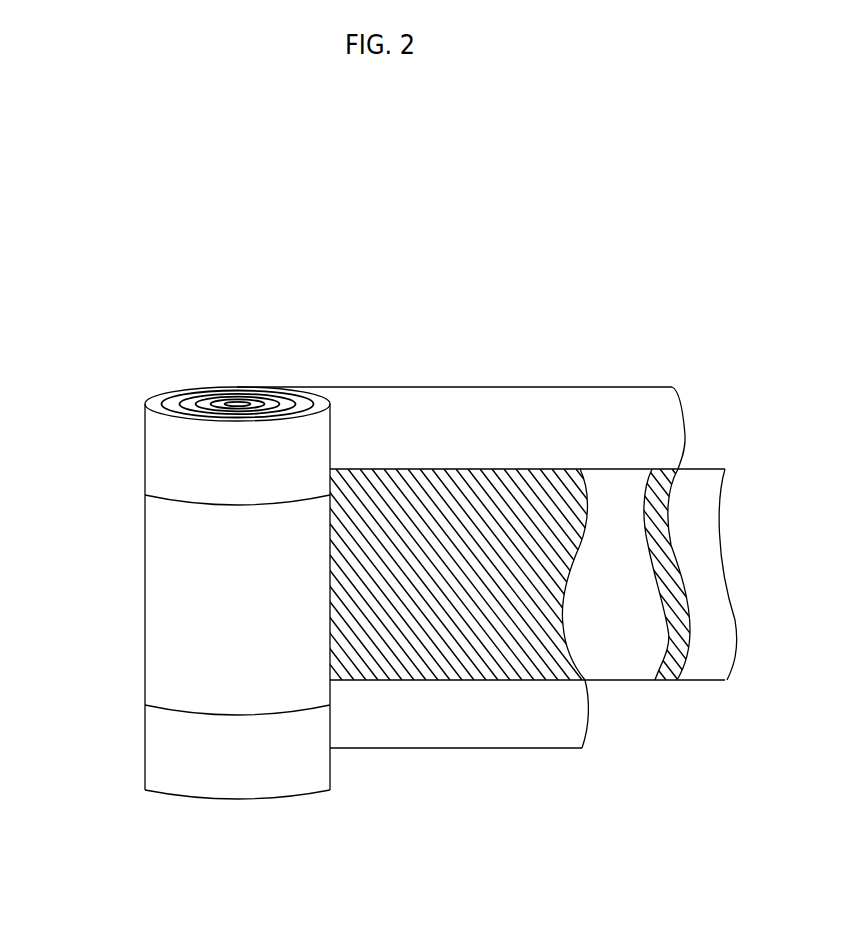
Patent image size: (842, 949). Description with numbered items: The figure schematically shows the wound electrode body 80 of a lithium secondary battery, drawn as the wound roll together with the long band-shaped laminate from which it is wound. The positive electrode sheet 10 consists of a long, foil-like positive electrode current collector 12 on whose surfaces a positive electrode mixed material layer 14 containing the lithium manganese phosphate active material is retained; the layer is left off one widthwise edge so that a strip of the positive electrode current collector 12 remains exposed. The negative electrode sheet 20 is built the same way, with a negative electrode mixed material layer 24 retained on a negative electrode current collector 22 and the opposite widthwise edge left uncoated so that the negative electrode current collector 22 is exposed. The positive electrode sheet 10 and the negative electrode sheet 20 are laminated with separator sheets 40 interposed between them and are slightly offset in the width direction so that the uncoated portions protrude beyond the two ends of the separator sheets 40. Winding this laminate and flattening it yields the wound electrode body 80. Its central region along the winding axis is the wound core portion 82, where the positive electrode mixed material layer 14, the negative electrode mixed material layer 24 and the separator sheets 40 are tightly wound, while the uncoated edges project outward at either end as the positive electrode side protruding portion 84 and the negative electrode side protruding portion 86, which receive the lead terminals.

The positive electrode sheet 10 is at (365, 749).
The positive electrode current collector 12 is at (435, 735).
The positive electrode mixed material layer 14 is at (537, 680).
The negative electrode sheet 20 is at (424, 387).
The negative electrode current collector 22 is at (645, 397).
The negative electrode mixed material layer 24 is at (668, 470).
The separator sheets 40 is at (606, 660).
The wound electrode body 80 is at (145, 370).
The wound core portion 82 is at (160, 609).
The positive electrode side protruding portion 84 is at (160, 746).
The negative electrode side protruding portion 86 is at (158, 470).